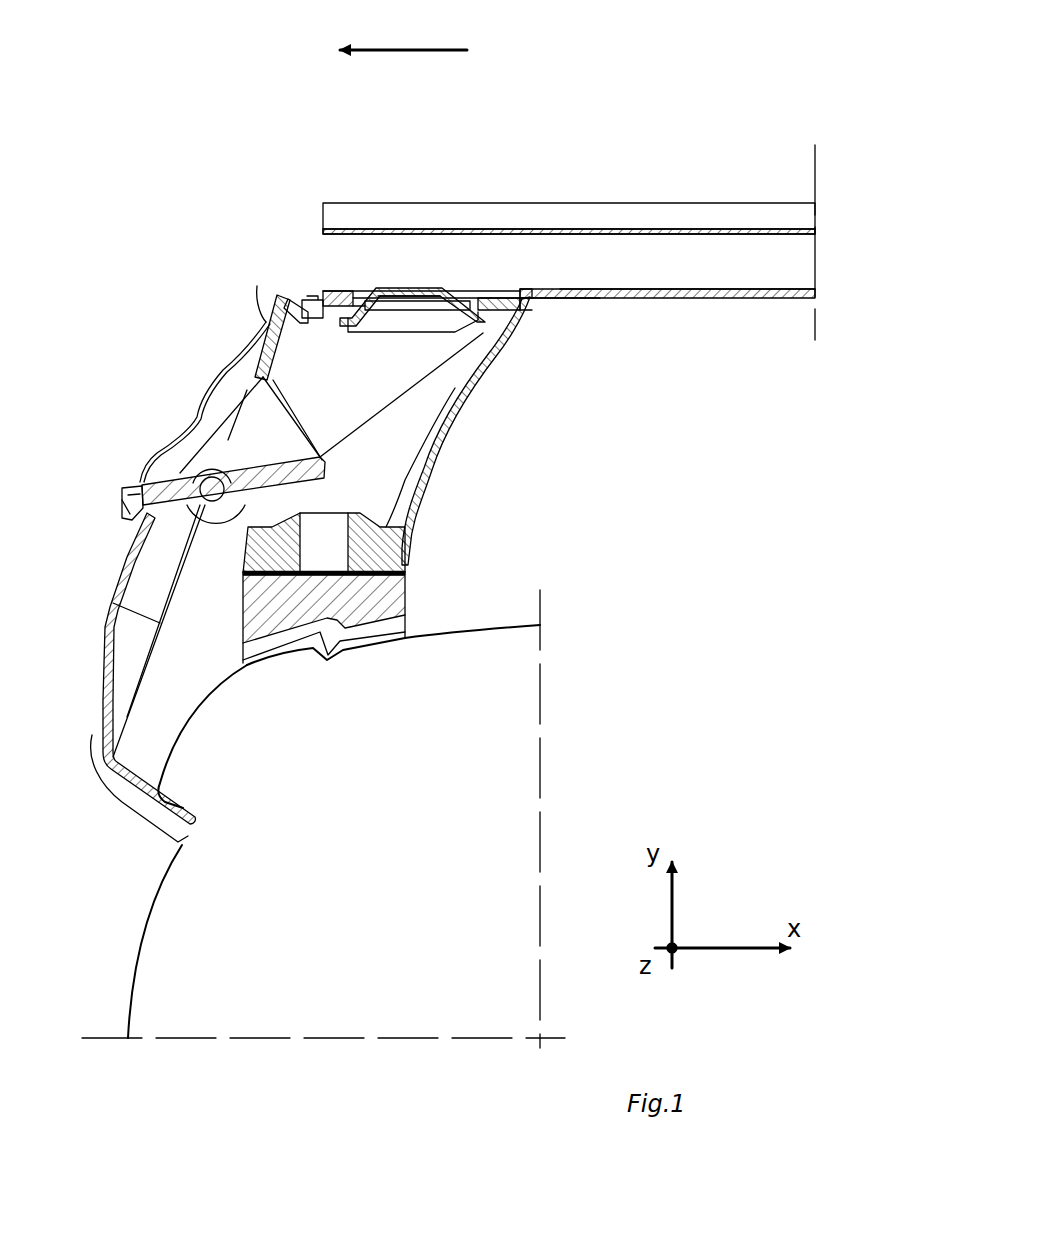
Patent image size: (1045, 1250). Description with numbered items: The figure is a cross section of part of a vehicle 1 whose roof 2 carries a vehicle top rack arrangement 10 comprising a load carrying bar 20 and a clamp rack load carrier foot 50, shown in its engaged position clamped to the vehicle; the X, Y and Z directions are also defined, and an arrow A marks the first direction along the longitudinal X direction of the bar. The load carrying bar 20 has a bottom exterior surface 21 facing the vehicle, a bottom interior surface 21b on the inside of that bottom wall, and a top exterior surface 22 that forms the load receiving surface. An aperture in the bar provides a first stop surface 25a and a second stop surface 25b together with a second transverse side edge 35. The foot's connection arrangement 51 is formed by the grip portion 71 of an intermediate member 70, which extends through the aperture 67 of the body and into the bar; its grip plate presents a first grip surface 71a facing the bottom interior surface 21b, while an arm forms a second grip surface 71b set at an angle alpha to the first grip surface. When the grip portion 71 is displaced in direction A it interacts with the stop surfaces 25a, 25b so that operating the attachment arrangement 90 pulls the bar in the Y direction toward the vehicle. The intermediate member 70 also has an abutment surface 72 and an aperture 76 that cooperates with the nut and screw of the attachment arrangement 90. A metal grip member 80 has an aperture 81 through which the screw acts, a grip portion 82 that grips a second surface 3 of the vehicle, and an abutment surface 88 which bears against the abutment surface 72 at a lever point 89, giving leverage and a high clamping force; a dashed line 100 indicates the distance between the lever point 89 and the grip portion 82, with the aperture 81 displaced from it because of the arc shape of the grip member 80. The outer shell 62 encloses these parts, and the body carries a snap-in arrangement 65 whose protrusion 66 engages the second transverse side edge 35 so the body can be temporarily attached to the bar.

The arrow indicating first X direction A is at (392, 50).
The vehicle 1 is at (520, 762).
The roof 2 is at (462, 625).
The second surface of the vehicle 3 is at (185, 797).
The vehicle top rack arrangement 10 is at (290, 196).
The load carrying bar 20 is at (588, 196).
The bottom exterior surface 21 is at (672, 299).
The bottom interior surface 21b is at (636, 290).
The top exterior surface 22 is at (612, 200).
The first stop surface 25a is at (500, 294).
The second stop surface 25b is at (366, 298).
The second transverse side edge 35 is at (532, 296).
The load carrier foot 50 is at (198, 344).
The connection arrangement 51 is at (473, 337).
The outer shell 62 is at (410, 413).
The snap-in arrangement 65 is at (512, 283).
The protrusion 66 is at (528, 300).
The aperture of the body 67 is at (480, 314).
The intermediate member 70 is at (340, 415).
The grip portion 71 is at (432, 292).
The first grip surface 71a is at (415, 300).
The second grip surface 71b is at (376, 318).
The abutment surface of the intermediate member 72 is at (282, 358).
The aperture 76 is at (210, 512).
The grip member 80 is at (170, 436).
The aperture of the grip member 81 is at (140, 535).
The grip portion of the grip member 82 is at (145, 815).
The abutment surface of the grip member 88 is at (305, 303).
The lever point 89 is at (272, 300).
The attachment arrangement 90 is at (130, 470).
The dashed line 100 is at (140, 720).
The angle alpha is at (388, 314).